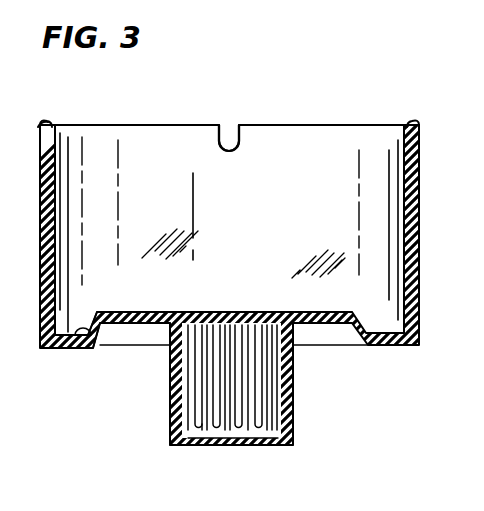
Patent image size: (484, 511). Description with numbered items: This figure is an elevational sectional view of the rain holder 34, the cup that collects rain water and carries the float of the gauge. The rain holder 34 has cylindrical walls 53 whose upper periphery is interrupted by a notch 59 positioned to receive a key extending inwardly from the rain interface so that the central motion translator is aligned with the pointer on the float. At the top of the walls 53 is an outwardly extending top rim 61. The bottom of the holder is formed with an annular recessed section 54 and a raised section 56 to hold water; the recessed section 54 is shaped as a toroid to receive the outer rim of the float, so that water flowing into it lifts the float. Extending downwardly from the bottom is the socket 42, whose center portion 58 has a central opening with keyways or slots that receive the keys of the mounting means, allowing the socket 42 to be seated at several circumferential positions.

The rain holder 34 is at (412, 107).
The socket 42 is at (310, 413).
The cylindrical walls 53 is at (43, 337).
The annular recessed section 54 is at (95, 341).
The raised section 56 is at (178, 313).
The center portion 58 is at (210, 378).
The notch 59 is at (228, 143).
The top rim 61 is at (43, 127).